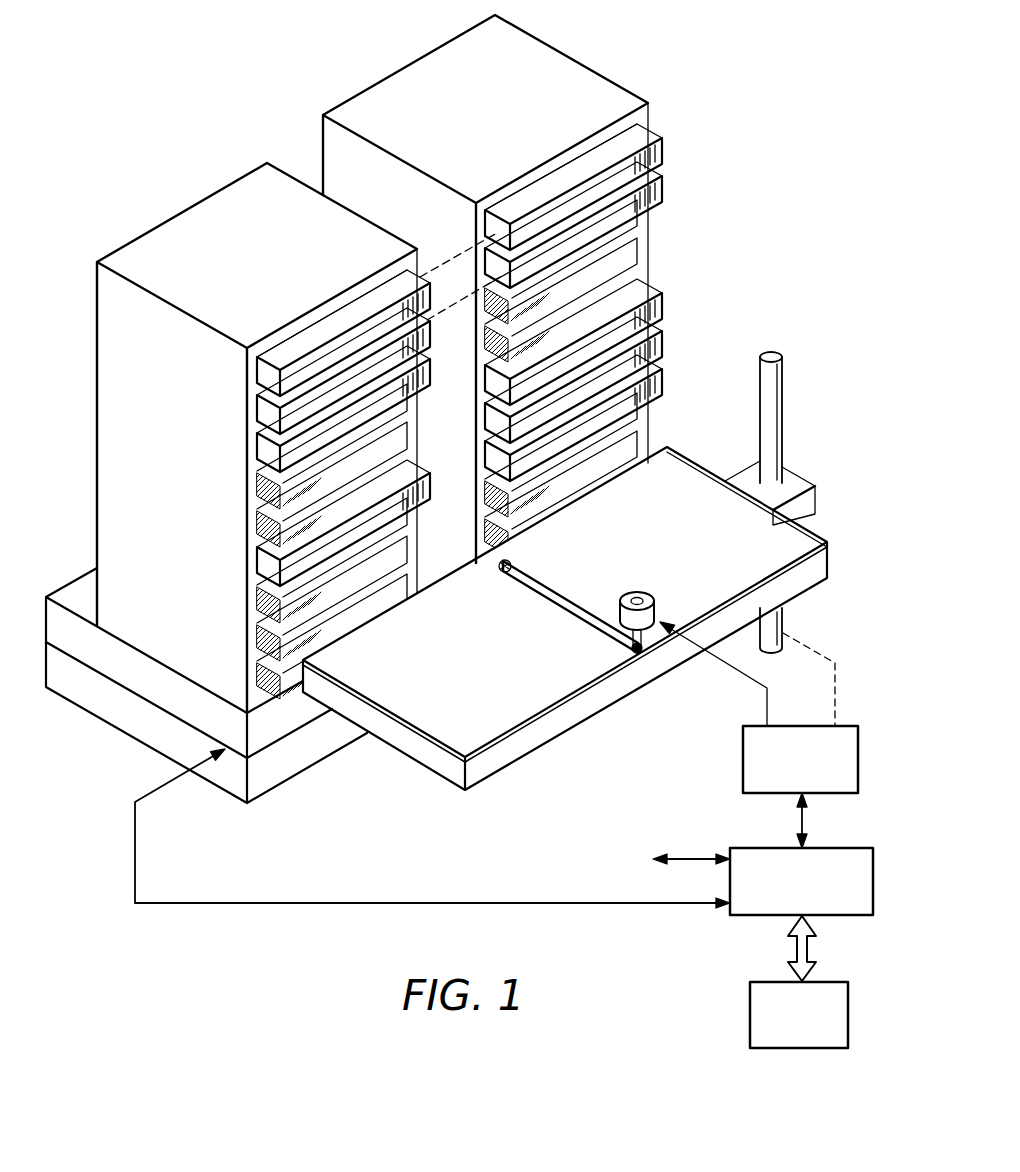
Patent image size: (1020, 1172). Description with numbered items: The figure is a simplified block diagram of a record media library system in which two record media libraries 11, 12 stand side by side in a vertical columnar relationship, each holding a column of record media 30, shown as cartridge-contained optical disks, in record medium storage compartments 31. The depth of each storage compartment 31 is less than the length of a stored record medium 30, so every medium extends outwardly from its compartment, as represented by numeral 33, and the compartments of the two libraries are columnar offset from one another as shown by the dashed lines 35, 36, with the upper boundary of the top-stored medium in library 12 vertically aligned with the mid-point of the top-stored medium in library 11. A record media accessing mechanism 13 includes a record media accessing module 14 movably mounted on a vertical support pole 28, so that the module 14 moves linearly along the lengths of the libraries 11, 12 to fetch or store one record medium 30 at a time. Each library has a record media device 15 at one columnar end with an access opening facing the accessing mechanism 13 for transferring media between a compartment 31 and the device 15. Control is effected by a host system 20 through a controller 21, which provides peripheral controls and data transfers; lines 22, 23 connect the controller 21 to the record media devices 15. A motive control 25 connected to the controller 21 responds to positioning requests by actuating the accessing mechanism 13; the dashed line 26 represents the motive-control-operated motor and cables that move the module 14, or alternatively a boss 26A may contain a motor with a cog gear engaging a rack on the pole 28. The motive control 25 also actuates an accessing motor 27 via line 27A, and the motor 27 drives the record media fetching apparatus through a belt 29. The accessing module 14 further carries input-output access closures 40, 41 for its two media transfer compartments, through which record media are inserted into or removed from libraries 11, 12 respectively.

The record media library 11 is at (150, 240).
The record media library 12 is at (408, 72).
The record media accessing mechanism 13 is at (601, 572).
The record media accessing module 14 is at (425, 760).
The record media device 15 is at (124, 720).
The host system 20 is at (850, 1015).
The controller 21 is at (875, 884).
The line 22 is at (432, 828).
The line 23 is at (695, 856).
The motive control 25 is at (860, 758).
The dashed line 26 is at (840, 690).
The boss 26A is at (812, 510).
The accessing motor 27 is at (630, 590).
The line 27A is at (730, 672).
The pole 28 is at (774, 390).
The belt 29 is at (562, 592).
The record medium 30 is at (262, 378).
The record medium storage compartment 31 is at (648, 258).
The extension of record medium 33 is at (297, 322).
The dashed line 35 is at (462, 252).
The dashed line 36 is at (452, 318).
The IO access closure 40 is at (537, 722).
The IO access closure 41 is at (828, 548).